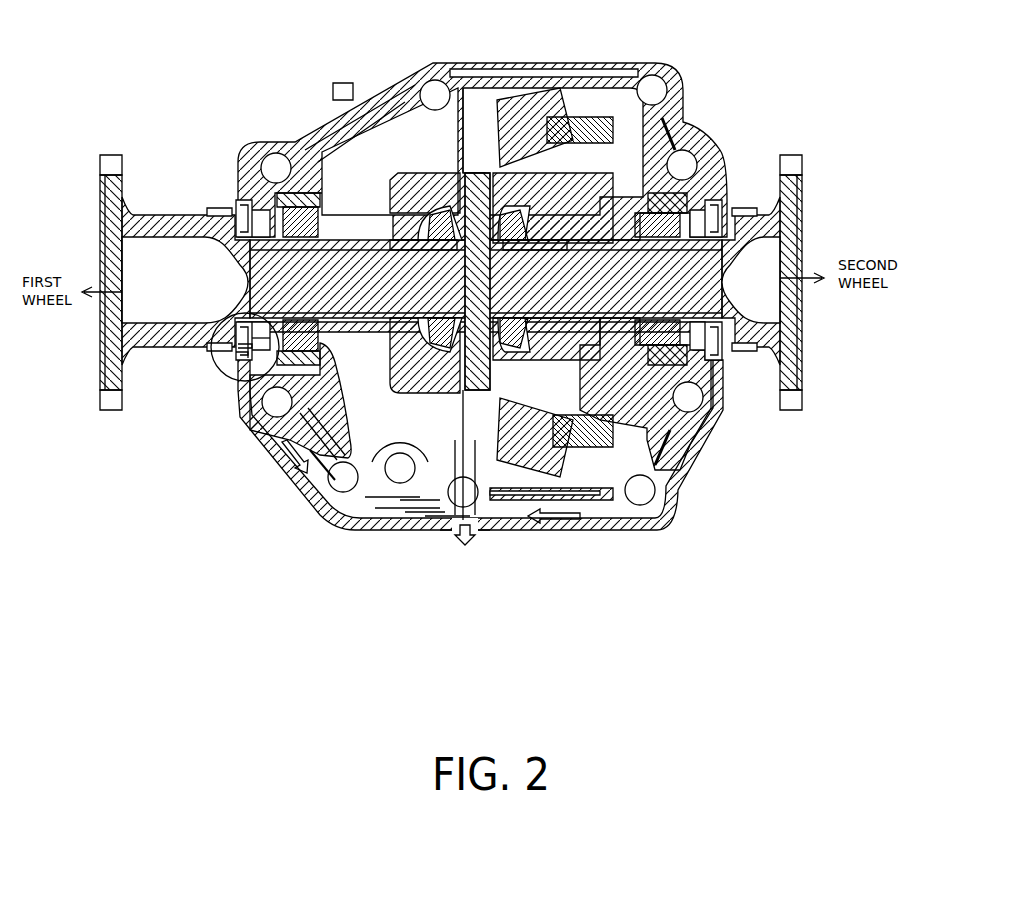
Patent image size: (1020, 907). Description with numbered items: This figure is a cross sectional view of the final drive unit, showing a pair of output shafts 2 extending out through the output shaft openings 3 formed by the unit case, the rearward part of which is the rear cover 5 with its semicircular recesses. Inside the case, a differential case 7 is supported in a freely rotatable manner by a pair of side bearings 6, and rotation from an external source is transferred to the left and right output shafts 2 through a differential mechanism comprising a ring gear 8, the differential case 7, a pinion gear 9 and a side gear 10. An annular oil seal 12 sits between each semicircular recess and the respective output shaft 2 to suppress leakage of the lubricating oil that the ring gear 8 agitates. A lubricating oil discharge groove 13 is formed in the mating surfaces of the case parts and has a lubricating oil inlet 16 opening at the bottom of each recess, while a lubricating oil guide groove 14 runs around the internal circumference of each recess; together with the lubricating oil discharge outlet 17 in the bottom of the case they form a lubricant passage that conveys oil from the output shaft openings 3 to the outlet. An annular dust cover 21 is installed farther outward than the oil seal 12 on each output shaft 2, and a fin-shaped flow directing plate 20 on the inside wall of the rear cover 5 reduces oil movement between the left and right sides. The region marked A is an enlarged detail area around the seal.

The output shaft 2 is at (720, 318).
The output shaft opening 3 is at (218, 197).
The rear cover 5 is at (712, 152).
The side bearing 6 is at (297, 195).
The differential case 7 is at (593, 197).
The ring gear 8 is at (545, 105).
The pinion gear 9 is at (452, 345).
The side gear 10 is at (330, 500).
The oil seal 12 is at (238, 198).
The lubricating oil discharge groove 13 is at (300, 478).
The lubricating oil guide groove 14 is at (227, 367).
The lubricating oil inlet 16 is at (237, 380).
The lubricating oil discharge outlet 17 is at (452, 532).
The flow directing plate 20 is at (460, 443).
The dust cover 21 is at (214, 353).
The seal region A is at (232, 392).